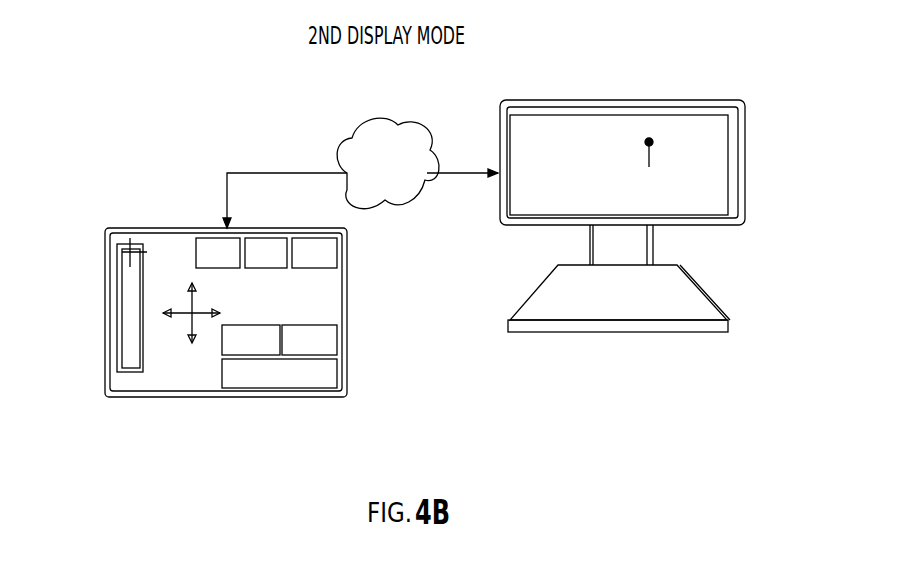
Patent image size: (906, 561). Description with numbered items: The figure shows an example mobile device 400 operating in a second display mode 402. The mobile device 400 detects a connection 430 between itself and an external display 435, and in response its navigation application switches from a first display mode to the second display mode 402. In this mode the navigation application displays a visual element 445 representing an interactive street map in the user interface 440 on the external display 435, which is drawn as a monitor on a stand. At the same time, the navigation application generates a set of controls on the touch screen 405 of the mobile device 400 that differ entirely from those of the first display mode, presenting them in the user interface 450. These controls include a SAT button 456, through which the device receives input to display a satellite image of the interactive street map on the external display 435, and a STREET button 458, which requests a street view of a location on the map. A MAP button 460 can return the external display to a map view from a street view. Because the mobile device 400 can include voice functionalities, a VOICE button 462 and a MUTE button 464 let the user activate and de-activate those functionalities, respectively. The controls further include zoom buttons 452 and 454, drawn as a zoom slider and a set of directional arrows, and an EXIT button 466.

The mobile device 400 is at (163, 400).
The second display mode 402 is at (512, 47).
The touch screen 405 is at (190, 391).
The connection 430 is at (372, 118).
The external display 435 is at (627, 333).
The user interface 440 is at (732, 200).
The visual element 445 is at (707, 168).
The user interface 450 is at (323, 293).
The zoom button 452 is at (122, 303).
The zoom button 454 is at (178, 298).
The SAT button 456 is at (203, 238).
The STREET button 458 is at (253, 237).
The map button 460 is at (337, 253).
The voice button 462 is at (262, 325).
The mute button 464 is at (337, 341).
The EXIT button 466 is at (300, 389).